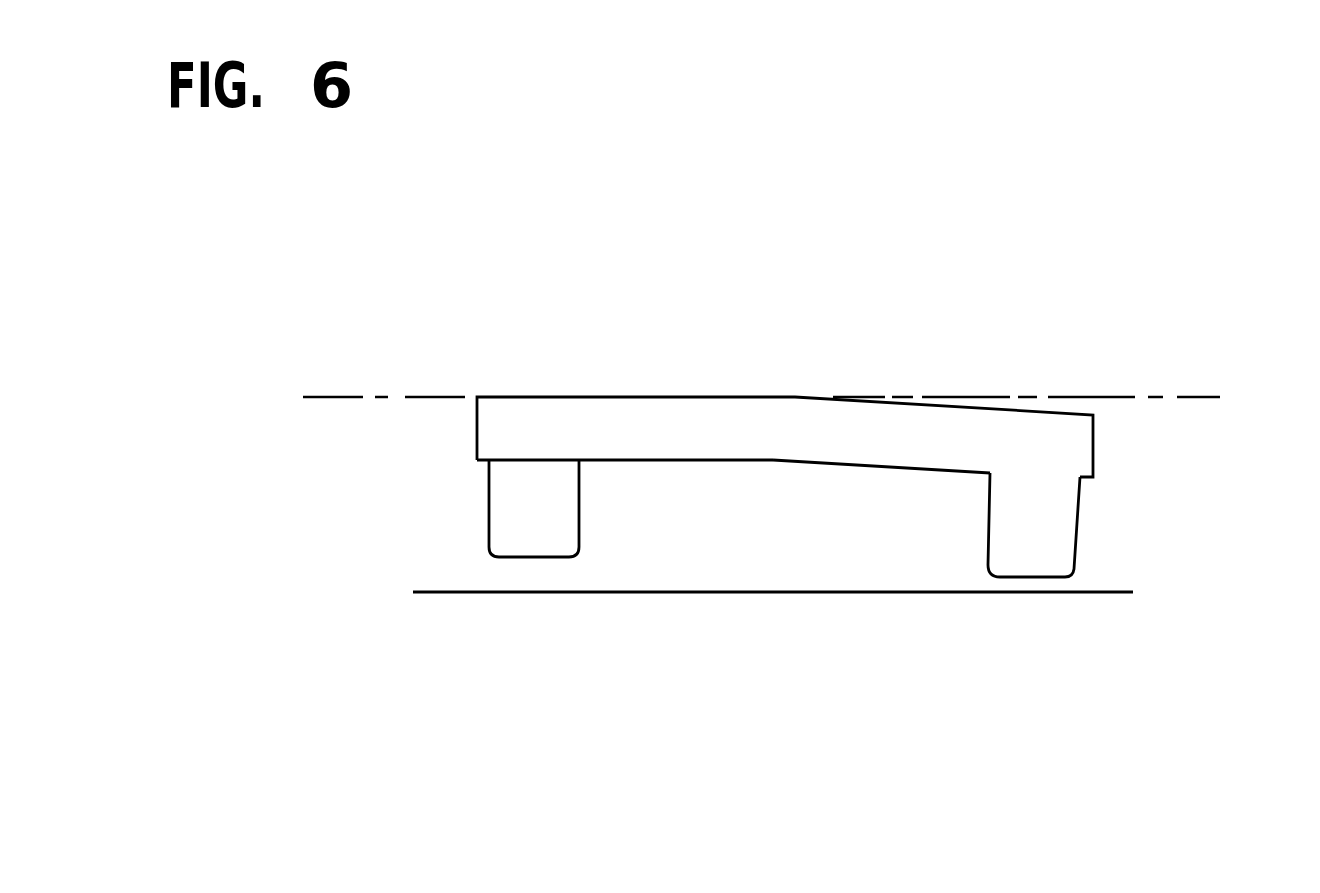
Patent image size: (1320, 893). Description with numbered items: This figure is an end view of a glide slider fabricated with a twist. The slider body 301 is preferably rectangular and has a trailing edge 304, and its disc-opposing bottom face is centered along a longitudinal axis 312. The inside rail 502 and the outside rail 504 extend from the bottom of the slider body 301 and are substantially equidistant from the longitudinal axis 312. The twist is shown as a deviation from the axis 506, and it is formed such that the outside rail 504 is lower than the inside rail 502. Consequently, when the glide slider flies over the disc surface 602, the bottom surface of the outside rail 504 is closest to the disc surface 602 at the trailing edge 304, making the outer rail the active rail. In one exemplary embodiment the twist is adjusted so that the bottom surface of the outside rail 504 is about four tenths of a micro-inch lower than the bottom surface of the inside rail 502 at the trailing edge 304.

The slider body 301 is at (683, 397).
The trailing edge 304 is at (742, 433).
The longitudinal axis 312 is at (782, 462).
The inside rail 502 is at (512, 515).
The outside rail 504 is at (1052, 528).
The axis 506 is at (400, 398).
The disc surface 602 is at (1103, 588).